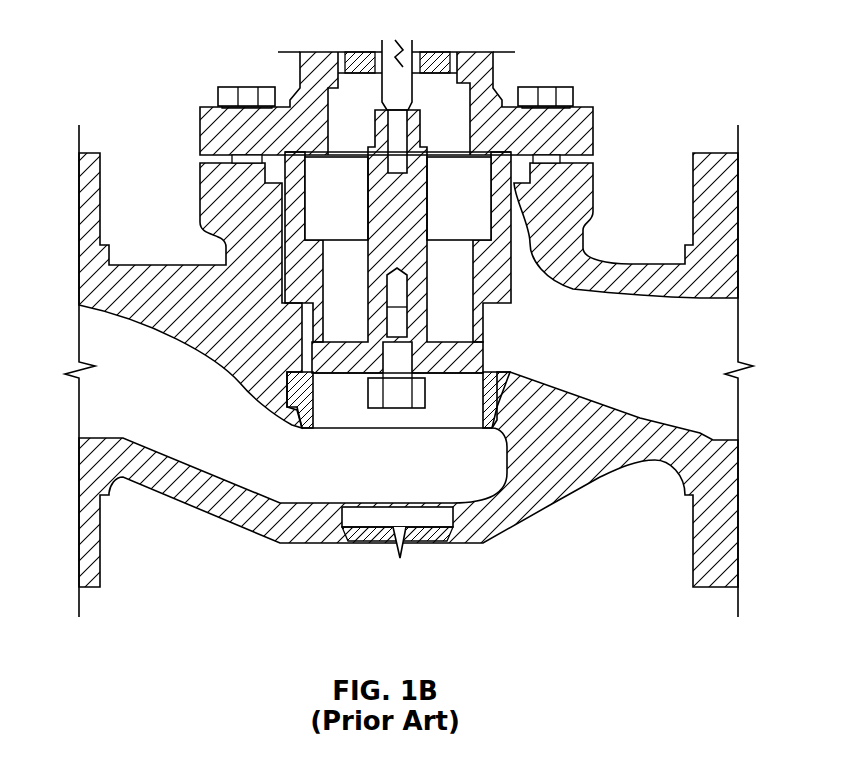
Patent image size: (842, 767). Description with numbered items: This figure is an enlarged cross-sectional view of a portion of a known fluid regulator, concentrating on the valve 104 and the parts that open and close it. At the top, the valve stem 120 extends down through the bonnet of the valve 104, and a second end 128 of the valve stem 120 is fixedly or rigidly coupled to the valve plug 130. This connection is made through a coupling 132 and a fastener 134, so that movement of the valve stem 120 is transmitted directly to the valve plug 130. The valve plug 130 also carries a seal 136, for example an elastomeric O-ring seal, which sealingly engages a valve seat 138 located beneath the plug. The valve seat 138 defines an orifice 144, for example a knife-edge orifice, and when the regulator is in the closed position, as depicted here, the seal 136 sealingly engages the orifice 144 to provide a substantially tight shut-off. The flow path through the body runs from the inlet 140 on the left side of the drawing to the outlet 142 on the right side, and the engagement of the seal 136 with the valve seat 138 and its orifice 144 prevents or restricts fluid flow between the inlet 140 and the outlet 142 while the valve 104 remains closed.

The valve 104 is at (668, 113).
The valve stem 120 is at (398, 60).
The second end of the valve stem 128 is at (390, 87).
The valve plug 130 is at (437, 257).
The coupling 132 is at (378, 199).
The fastener 134 is at (413, 400).
The seal 136 is at (515, 372).
The valve seat 138 is at (285, 410).
The inlet 140 is at (89, 337).
The outlet 142 is at (727, 401).
The orifice 144 is at (325, 374).